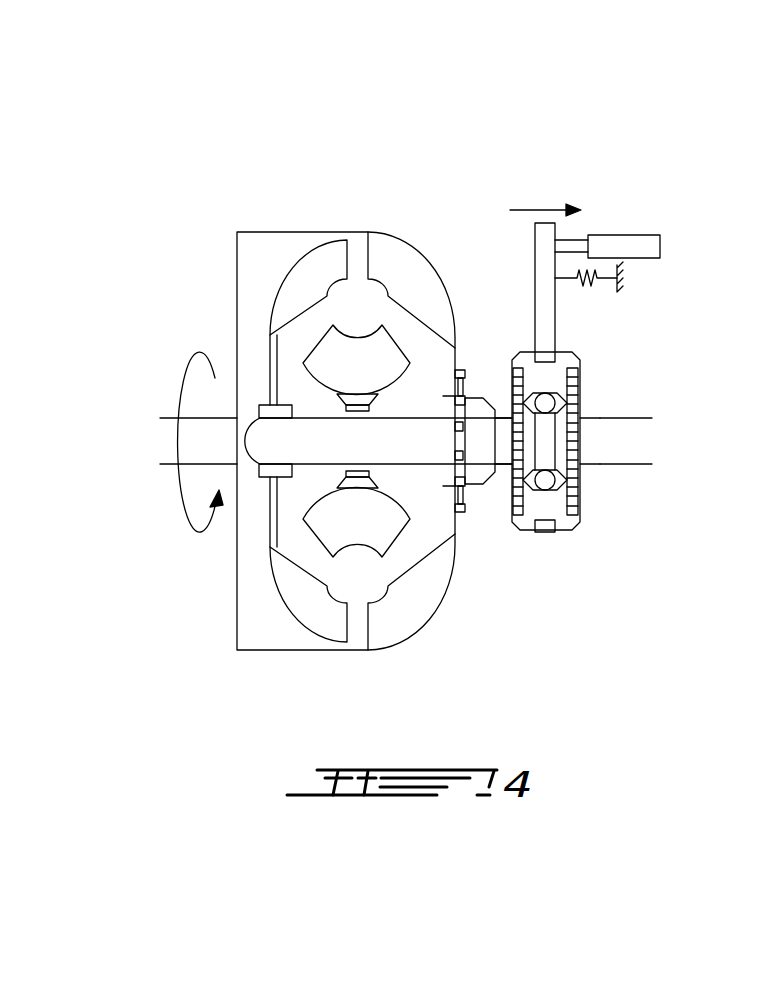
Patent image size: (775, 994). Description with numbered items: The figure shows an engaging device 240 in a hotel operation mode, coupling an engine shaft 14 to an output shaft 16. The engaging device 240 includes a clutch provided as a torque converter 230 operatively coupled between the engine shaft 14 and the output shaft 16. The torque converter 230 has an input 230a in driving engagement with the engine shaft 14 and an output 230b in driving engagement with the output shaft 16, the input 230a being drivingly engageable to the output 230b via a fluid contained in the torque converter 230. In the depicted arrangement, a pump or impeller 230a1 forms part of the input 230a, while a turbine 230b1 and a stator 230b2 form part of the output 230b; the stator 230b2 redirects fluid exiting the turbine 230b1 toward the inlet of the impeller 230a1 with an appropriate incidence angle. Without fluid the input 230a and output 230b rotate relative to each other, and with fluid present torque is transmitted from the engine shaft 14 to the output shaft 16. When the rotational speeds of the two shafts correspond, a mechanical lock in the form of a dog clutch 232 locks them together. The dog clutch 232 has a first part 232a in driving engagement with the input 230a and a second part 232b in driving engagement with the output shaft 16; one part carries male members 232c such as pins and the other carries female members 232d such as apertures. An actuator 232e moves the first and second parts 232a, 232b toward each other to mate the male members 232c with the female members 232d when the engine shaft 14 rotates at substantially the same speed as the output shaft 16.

The engine shaft 14 is at (173, 465).
The output shaft 16 is at (620, 418).
The torque converter 230 is at (396, 208).
The input 230a is at (237, 283).
The pump or impeller 230a1 is at (398, 608).
The output 230b is at (427, 465).
The turbine 230b1 is at (312, 595).
The stator 230b2 is at (327, 517).
The dog clutch 232 is at (608, 535).
The first part 232a is at (467, 398).
The second part 232b is at (580, 500).
The male members 232c is at (465, 512).
The female members 232d is at (512, 468).
The actuator 232e is at (625, 235).
The engaging device 240 is at (229, 176).